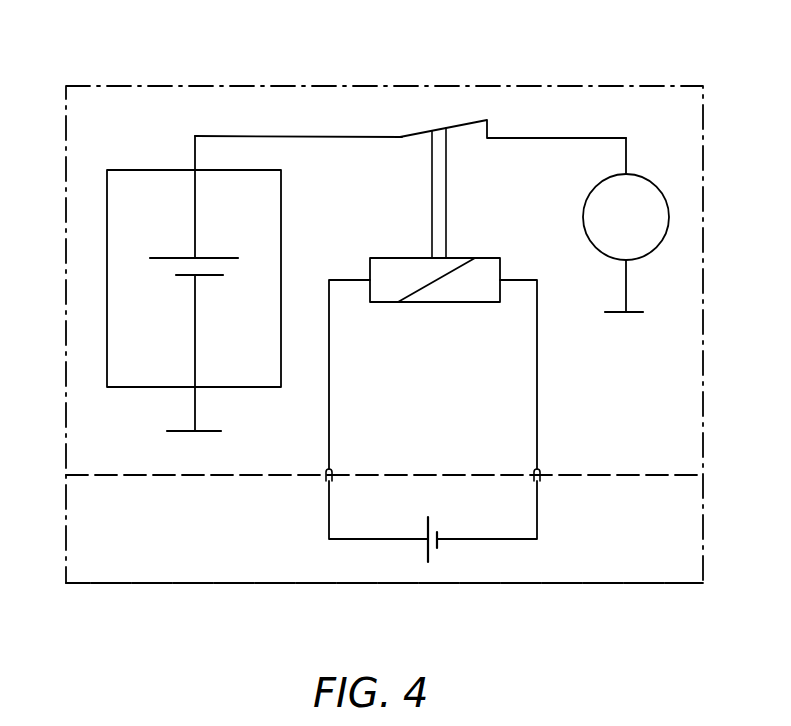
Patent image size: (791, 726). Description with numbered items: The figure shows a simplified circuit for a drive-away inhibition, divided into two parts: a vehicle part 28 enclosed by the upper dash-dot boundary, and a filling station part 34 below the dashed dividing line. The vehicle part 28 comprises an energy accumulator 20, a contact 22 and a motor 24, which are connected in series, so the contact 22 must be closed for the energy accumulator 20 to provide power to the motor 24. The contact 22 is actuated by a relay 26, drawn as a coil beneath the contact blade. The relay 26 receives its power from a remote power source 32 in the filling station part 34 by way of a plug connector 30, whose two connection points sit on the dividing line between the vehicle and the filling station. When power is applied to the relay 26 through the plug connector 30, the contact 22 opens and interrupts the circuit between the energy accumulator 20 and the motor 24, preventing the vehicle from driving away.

The energy accumulator 20 is at (127, 376).
The contact 22 is at (448, 118).
The motor 24 is at (640, 230).
The relay 26 is at (387, 274).
The vehicle part 28 is at (590, 70).
The plug connector 30 is at (531, 470).
The remote power source 32 is at (418, 550).
The filling station part 34 is at (124, 576).